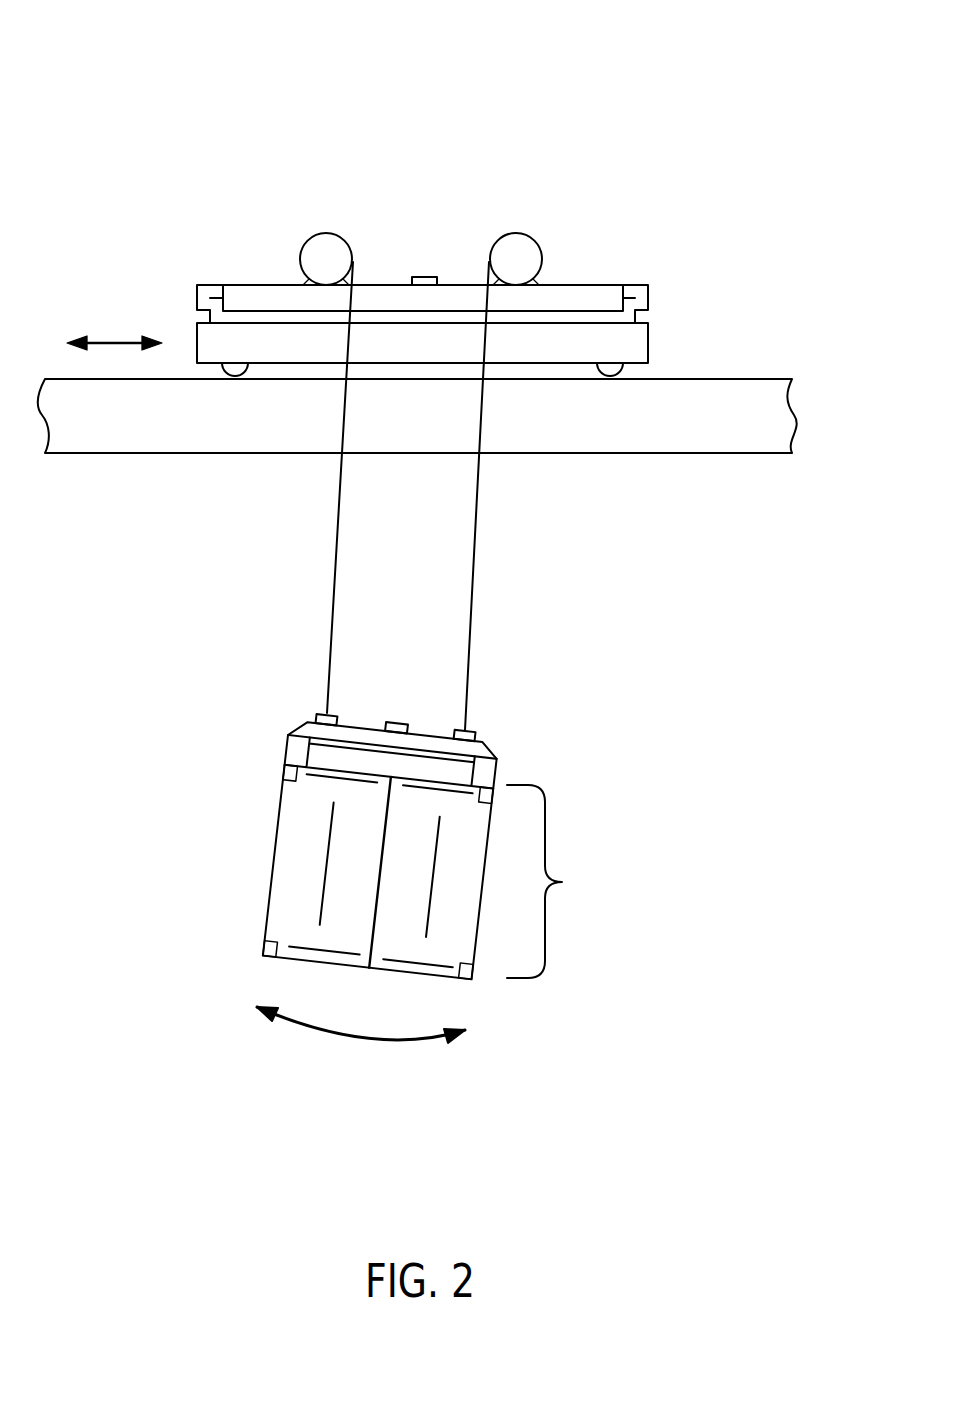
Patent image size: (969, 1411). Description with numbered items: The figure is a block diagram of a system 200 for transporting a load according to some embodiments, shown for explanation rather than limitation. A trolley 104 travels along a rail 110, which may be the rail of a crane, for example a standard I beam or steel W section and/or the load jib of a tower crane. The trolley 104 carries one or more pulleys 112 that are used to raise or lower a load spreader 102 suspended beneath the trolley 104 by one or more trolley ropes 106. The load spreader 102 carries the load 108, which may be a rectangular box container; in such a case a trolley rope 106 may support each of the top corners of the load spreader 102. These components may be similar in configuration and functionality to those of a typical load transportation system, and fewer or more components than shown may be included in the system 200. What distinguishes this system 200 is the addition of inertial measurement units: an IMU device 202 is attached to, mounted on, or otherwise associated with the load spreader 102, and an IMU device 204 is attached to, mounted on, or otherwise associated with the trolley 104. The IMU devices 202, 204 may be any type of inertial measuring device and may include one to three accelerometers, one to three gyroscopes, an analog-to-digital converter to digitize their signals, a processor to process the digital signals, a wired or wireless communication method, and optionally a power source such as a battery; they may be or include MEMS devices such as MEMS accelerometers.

The system for transporting a load 200 is at (118, 53).
The load spreader 102 is at (434, 854).
The trolley 104 is at (648, 343).
The trolley ropes 106 is at (337, 548).
The load 108 is at (448, 872).
The rail 110 is at (98, 453).
The pulleys 112 is at (302, 248).
The IMU device 202 is at (397, 722).
The IMU device 204 is at (425, 277).